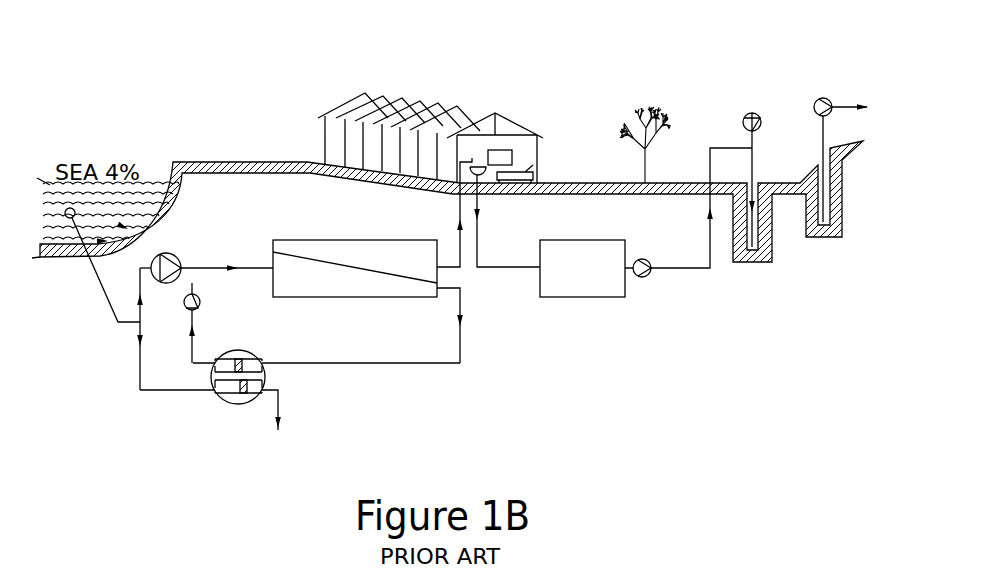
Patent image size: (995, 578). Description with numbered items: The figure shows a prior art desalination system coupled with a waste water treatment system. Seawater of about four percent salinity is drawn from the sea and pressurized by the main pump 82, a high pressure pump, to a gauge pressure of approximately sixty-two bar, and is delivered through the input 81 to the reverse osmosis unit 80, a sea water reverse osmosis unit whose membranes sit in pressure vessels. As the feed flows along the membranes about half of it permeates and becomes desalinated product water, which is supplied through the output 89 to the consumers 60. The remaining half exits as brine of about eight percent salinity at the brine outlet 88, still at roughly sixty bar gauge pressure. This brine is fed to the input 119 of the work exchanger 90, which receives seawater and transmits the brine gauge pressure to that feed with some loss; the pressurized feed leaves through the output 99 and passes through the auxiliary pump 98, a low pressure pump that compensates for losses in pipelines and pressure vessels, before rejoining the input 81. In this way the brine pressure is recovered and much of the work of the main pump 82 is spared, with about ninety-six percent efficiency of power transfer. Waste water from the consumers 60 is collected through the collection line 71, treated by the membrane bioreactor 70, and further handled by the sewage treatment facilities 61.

The consumers 60 is at (515, 116).
The sewage treatment facilities 61 is at (807, 80).
The membrane bioreactor 70 is at (560, 240).
The waste water collection 71 is at (479, 208).
The reverse osmosis unit 80 is at (294, 240).
The input 81 is at (215, 266).
The main pump 82 is at (168, 254).
The brine outlet 88 is at (460, 345).
The output 89 is at (460, 205).
The work exchanger 90 is at (243, 350).
The auxiliary pump 98 is at (200, 300).
The output 99 is at (192, 354).
The input 119 is at (296, 362).